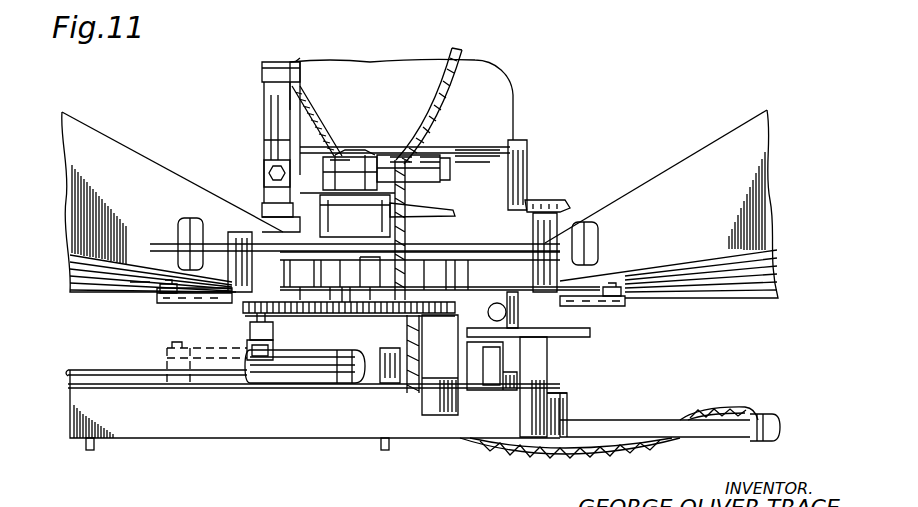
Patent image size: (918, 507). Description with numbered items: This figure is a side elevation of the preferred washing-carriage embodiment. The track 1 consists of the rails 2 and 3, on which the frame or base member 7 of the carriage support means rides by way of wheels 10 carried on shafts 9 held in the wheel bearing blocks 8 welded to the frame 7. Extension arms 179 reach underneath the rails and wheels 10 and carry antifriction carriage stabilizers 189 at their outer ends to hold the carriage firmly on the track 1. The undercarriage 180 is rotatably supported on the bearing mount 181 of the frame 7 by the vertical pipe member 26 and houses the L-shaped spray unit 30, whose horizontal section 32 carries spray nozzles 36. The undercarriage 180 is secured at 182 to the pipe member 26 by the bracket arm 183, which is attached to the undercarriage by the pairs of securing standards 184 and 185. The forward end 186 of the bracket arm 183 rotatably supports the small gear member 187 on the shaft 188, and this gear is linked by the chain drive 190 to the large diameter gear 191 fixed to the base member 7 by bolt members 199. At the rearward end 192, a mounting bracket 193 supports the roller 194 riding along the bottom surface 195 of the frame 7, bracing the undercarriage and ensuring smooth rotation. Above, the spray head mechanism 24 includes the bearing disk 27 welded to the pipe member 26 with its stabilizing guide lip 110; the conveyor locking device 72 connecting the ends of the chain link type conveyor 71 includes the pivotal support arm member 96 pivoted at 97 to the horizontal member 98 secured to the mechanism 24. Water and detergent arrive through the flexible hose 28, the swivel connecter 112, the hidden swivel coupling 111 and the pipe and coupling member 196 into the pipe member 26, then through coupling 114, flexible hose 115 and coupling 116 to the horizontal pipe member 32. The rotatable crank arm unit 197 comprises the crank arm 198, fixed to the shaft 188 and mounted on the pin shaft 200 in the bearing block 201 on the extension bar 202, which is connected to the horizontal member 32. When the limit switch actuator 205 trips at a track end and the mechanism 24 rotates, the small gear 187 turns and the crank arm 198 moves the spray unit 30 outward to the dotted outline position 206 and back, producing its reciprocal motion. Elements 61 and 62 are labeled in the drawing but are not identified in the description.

The track 1 is at (63, 150).
The rail 2 is at (95, 138).
The rail 3 is at (740, 142).
The frame or base member 7 is at (471, 279).
The wheel bearing blocks 8 is at (240, 240).
The shafts 9 is at (474, 232).
The wheel 10 is at (178, 240).
The spray head mechanism 24 is at (470, 133).
The vertical tubular or pipe member 26 is at (403, 183).
The bearing disk 27 is at (440, 220).
The flexible hose 28 is at (447, 90).
The L-shaped spray unit 30 is at (590, 420).
The horizontal section 32 is at (648, 420).
The spray nozzles 36 is at (90, 450).
The cover 61 is at (506, 114).
The strut 62 is at (314, 104).
The chain link type conveyor 71 is at (318, 128).
The conveyor locking device 72 is at (262, 70).
The pivotal support arm member 96 is at (265, 118).
The pivot 97 is at (268, 166).
The horizontal member 98 is at (265, 180).
The stabilizing guide lip 110 is at (356, 210).
The swivel coupling 111 is at (377, 150).
The swivel connecter 112 is at (370, 124).
The coupling 114 is at (390, 358).
The flexible hose 115 is at (500, 450).
The coupling 116 is at (778, 428).
The extension arms 179 is at (157, 298).
The undercarriage 180 is at (173, 420).
The bearing mount 181 is at (420, 292).
The securing point 182 is at (423, 357).
The bracket arm 183 is at (492, 366).
The securing standards 184 is at (445, 368).
The securing standards 185 is at (530, 378).
The forward end 186 is at (250, 330).
The small gear member 187 is at (278, 216).
The shaft 188 is at (250, 350).
The antifriction carriage stabilizers 189 is at (168, 284).
The chain drive 190 is at (337, 303).
The large diameter gear 191 is at (395, 276).
The rearward end 192 is at (545, 345).
The mounting bracket 193 is at (505, 330).
The roller 194 is at (490, 310).
The bottom surface 195 is at (470, 300).
The pipe and coupling member 196 is at (398, 150).
The rotatable crank arm unit 197 is at (298, 419).
The crank arm 198 is at (277, 367).
The bolt members 199 is at (445, 365).
The pin shaft 200 is at (349, 320).
The bearing block 201 is at (350, 385).
The extension bar 202 is at (112, 372).
The limit switch actuator 205 is at (568, 200).
The dotted outline position 206 is at (170, 352).